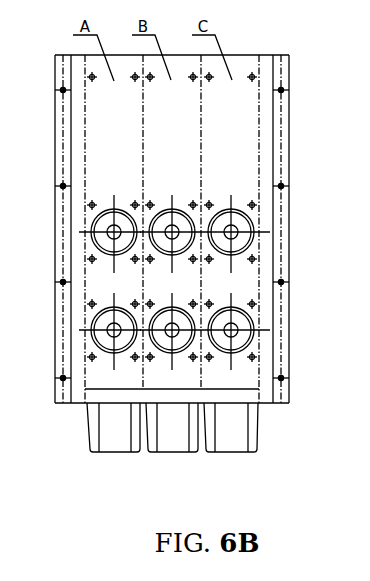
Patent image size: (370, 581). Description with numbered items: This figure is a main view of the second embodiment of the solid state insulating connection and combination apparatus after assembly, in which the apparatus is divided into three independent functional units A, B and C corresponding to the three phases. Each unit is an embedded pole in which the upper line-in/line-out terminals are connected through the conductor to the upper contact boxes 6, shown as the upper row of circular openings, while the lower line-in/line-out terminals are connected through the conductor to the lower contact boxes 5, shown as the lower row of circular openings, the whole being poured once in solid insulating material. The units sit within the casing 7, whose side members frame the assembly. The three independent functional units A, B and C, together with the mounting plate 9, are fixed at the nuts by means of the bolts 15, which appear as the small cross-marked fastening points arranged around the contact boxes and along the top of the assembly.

The lower contact boxes 5 is at (145, 328).
The upper contact boxes 6 is at (140, 218).
The casing 7 is at (300, 229).
The mounting plate 9 is at (304, 229).
The bolts 15 is at (207, 217).